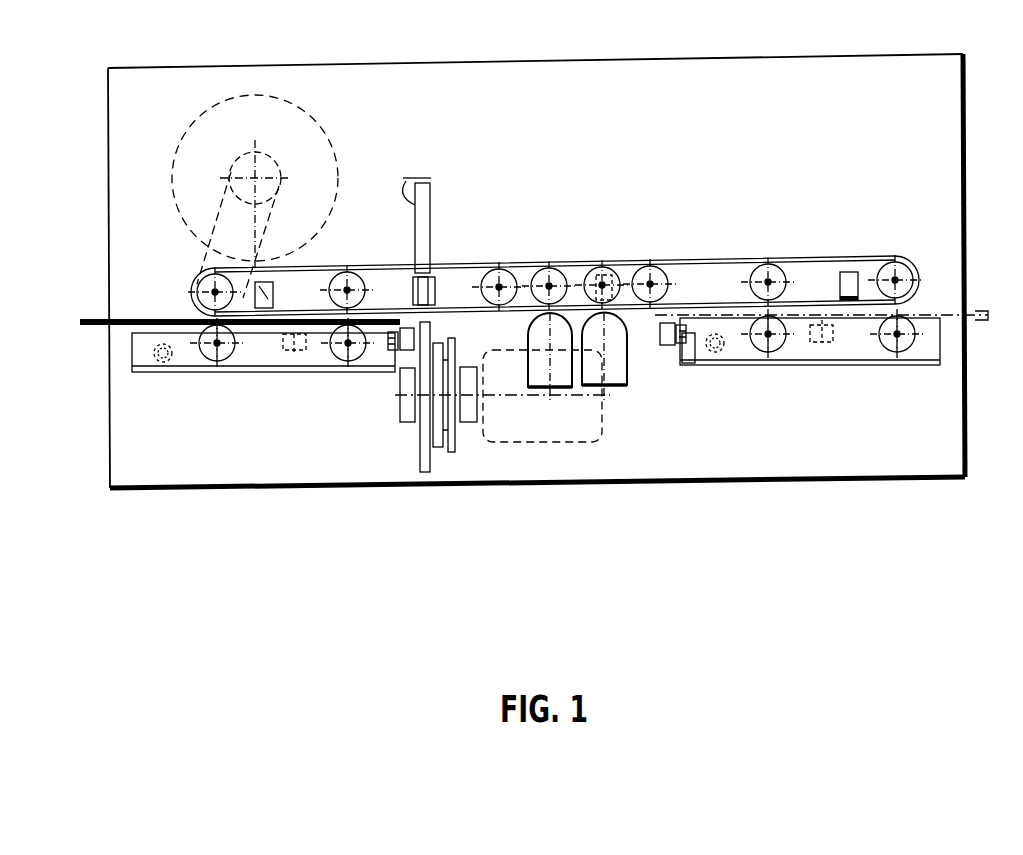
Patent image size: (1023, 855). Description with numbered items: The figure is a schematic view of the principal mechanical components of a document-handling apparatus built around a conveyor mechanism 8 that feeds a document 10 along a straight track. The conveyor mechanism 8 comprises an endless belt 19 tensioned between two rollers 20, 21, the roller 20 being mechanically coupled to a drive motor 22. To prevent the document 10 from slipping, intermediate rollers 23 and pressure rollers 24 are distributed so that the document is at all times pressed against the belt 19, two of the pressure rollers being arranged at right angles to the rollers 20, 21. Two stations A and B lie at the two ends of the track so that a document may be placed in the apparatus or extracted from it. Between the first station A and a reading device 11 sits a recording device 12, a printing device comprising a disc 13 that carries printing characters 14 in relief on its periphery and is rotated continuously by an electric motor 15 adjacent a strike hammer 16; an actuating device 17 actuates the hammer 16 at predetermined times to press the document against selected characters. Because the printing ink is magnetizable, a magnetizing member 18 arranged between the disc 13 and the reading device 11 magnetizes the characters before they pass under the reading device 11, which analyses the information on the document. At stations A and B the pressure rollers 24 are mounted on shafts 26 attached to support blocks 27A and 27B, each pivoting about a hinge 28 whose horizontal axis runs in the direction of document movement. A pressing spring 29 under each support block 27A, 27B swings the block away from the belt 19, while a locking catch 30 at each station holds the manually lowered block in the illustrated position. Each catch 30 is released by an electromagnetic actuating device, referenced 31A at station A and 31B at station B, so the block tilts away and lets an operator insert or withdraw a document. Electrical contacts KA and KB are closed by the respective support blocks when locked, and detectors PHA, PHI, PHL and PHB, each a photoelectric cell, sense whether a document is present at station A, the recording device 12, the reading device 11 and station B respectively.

The conveyor mechanism 8 is at (628, 174).
The document 10 is at (181, 320).
The reading device 11 is at (606, 376).
The recording device 12 is at (417, 178).
The disc 13 is at (430, 462).
The printing characters 14 is at (420, 447).
The electric motor 15 is at (604, 443).
The strike hammer 16 is at (440, 283).
The actuating device 17 is at (423, 215).
The magnetizing member 18 is at (531, 380).
The endless belt 19 is at (708, 258).
The roller 20 is at (200, 292).
The roller 21 is at (893, 278).
The drive motor 22 is at (338, 143).
The intermediate rollers 23 is at (347, 280).
The pressure rollers 24 is at (215, 350).
The shafts 26 is at (228, 356).
The support block 27A is at (240, 357).
The support block 27B is at (821, 346).
The hinge 28 is at (170, 372).
The pressing spring 29 is at (293, 354).
The locking catch 30 is at (394, 342).
The electromagnetic actuating device 31A is at (421, 334).
The electromagnetic actuating device 31B is at (661, 336).
The detector PHA is at (222, 273).
The detector PHI is at (413, 290).
The detector PHL is at (576, 270).
The detector PHB is at (840, 265).
The electrical contact KA is at (158, 363).
The electrical contact KB is at (716, 353).
The station A is at (270, 354).
The station B is at (862, 349).